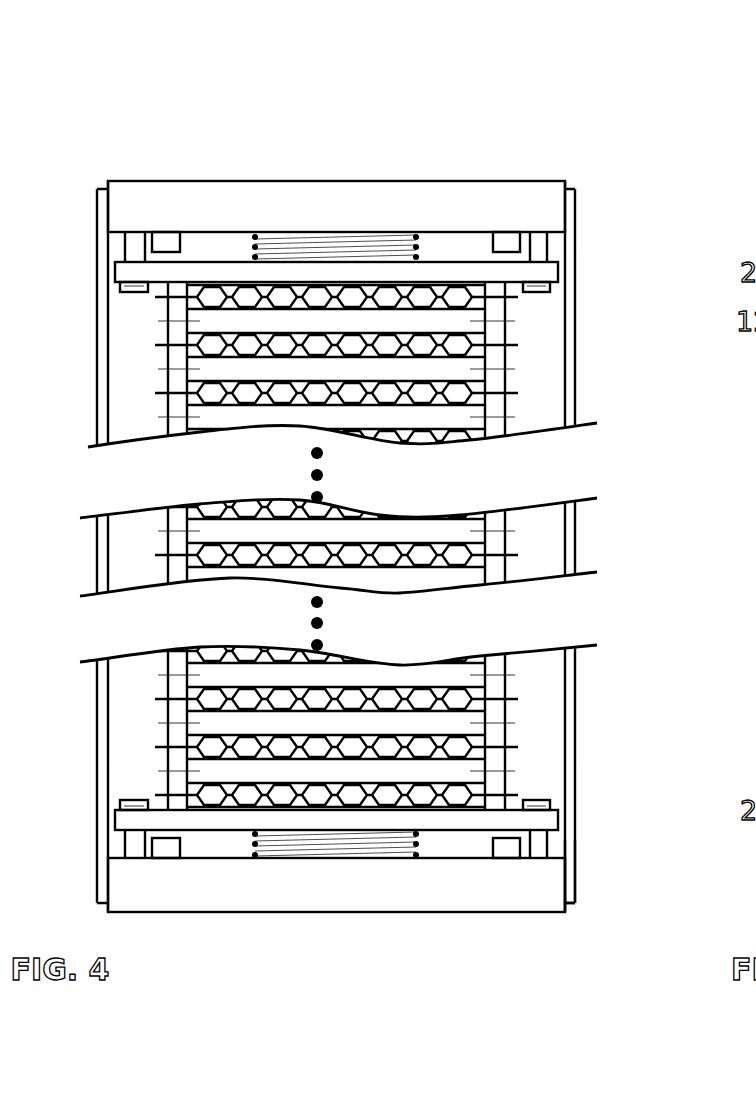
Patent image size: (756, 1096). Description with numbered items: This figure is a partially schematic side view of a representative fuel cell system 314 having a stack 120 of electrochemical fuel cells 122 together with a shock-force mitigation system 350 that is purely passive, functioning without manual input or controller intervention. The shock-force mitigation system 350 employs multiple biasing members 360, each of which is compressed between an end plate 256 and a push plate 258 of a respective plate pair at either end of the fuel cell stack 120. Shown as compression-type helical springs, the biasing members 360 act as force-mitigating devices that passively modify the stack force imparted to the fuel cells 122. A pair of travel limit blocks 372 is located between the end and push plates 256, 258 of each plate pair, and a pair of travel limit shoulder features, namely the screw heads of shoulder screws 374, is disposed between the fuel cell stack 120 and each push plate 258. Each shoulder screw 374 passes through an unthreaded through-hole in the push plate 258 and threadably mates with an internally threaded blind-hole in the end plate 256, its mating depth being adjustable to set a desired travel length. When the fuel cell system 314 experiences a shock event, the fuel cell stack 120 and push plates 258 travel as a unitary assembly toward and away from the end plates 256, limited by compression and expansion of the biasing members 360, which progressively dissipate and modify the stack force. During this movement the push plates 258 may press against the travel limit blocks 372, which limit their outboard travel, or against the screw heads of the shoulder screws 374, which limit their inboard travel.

The fuel cell system 314 is at (616, 138).
The fuel cell stack 120 is at (112, 372).
The fuel cells 122 is at (538, 306).
The end plate 256 is at (395, 181).
The push plate 258 is at (115, 266).
The shoulder screw 374 is at (125, 252).
The travel limit block 372 is at (180, 241).
The biasing member 360 is at (288, 242).
The shock-force mitigation system 350 is at (566, 835).